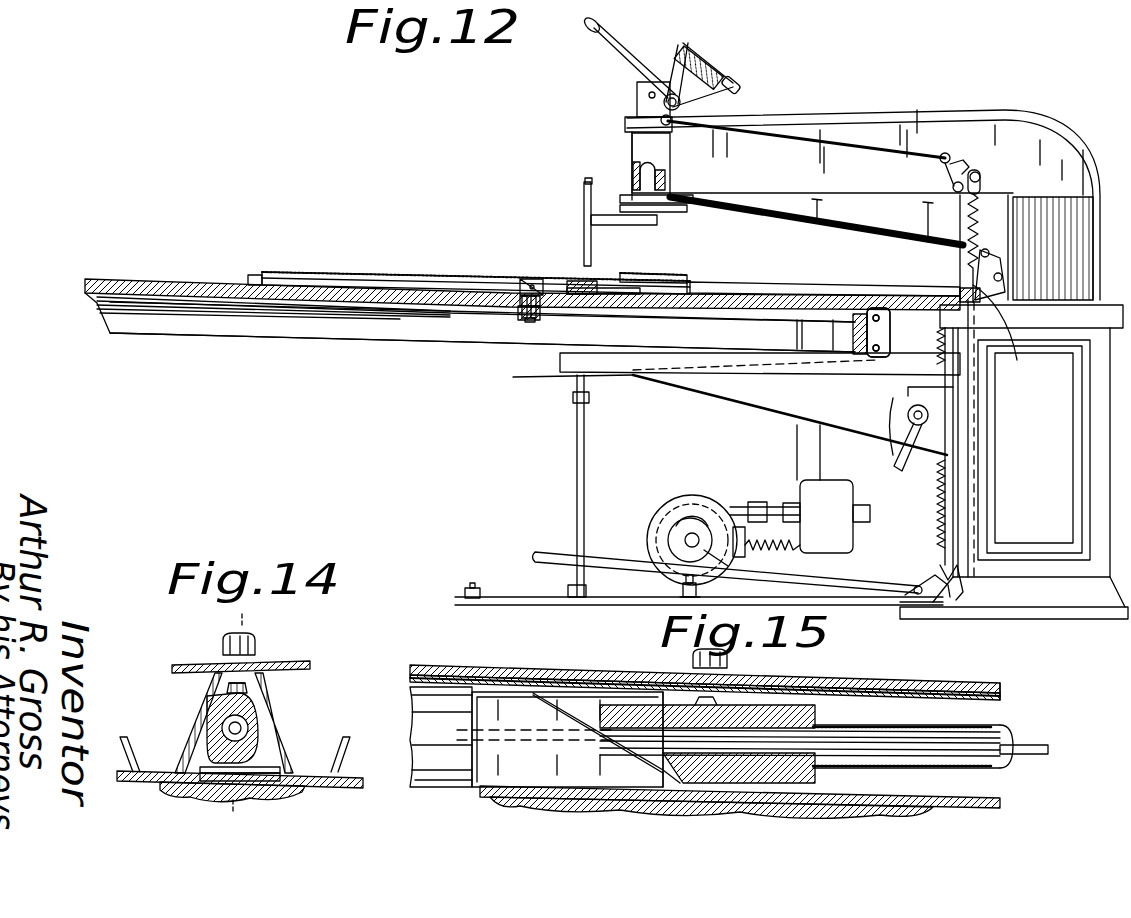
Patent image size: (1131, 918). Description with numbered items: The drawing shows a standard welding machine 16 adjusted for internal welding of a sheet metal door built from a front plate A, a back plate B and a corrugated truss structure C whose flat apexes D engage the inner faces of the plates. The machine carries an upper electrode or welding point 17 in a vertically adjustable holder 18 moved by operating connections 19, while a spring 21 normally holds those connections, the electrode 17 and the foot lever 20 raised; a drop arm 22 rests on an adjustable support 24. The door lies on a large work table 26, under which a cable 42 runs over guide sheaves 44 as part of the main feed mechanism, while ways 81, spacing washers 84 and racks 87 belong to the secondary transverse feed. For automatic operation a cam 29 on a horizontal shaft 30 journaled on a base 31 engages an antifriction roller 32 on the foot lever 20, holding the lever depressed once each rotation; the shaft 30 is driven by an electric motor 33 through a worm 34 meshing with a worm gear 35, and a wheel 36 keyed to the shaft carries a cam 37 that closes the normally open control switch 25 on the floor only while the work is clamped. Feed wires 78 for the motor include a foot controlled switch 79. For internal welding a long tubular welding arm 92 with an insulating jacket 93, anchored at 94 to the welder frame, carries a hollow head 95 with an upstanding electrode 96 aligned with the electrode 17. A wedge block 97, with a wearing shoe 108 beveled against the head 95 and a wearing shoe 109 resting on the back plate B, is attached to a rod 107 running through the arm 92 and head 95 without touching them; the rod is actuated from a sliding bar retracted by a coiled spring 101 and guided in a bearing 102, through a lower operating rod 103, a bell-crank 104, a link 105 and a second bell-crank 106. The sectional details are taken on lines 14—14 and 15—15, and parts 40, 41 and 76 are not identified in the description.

In FIG. 12, the section line 14 is at (593, 238).
In FIG. 14, the section line 15 is at (236, 713).
In FIG. 12, the welding machine 16 is at (1075, 135).
In FIG. 12, the upper electrode 17 is at (583, 240).
In FIG. 14, the upper electrode 17 is at (222, 646).
In FIG. 15, the upper electrode 17 is at (692, 660).
In FIG. 12, the vertically adjustable holder 18 is at (662, 178).
In FIG. 12, the operating connections 19 is at (832, 140).
In FIG. 12, the foot lever 20 is at (938, 580).
In FIG. 12, the spring 21 is at (982, 245).
In FIG. 12, the drop arm 22 is at (735, 380).
In FIG. 12, the adjustable support 24 is at (576, 432).
In FIG. 12, the control switch 25 is at (680, 596).
In FIG. 12, the work table 26 is at (190, 281).
In FIG. 14, the work table 26 is at (300, 800).
In FIG. 15, the work table 26 is at (590, 808).
In FIG. 12, the cam 29 is at (680, 528).
In FIG. 12, the horizontal shaft 30 is at (684, 541).
In FIG. 12, the base 31 is at (729, 588).
In FIG. 12, the antifriction roller 32 is at (704, 552).
In FIG. 12, the electric motor 33 is at (825, 488).
In FIG. 12, the worm 34 is at (708, 512).
In FIG. 12, the worm gear 35 is at (718, 514).
In FIG. 12, the wheel 36 is at (680, 498).
In FIG. 12, the cam 37 is at (702, 503).
In FIG. 12, the guide rail 40 is at (275, 272).
In FIG. 12, the clip 41 is at (250, 275).
In FIG. 12, the cable 42 is at (892, 330).
In FIG. 12, the guide sheaves 44 is at (890, 316).
In FIG. 12, the rod 76 is at (567, 573).
In FIG. 12, the electric feed wires 78 is at (905, 450).
In FIG. 12, the foot controlled switch 79 is at (472, 586).
In FIG. 12, the ways 81 is at (522, 312).
In FIG. 12, the spacing washers 84 is at (527, 326).
In FIG. 12, the racks 87 is at (535, 318).
In FIG. 12, the welding arm 92 is at (740, 288).
In FIG. 15, the welding arm 92 is at (1000, 745).
In FIG. 15, the insulating jacket 93 is at (975, 730).
In FIG. 12, the anchorage 94 is at (955, 292).
In FIG. 12, the hollow head 95 is at (610, 281).
In FIG. 14, the hollow head 95 is at (250, 708).
In FIG. 15, the hollow head 95 is at (822, 718).
In FIG. 12, the welding point 96 is at (575, 281).
In FIG. 14, the welding point 96 is at (250, 688).
In FIG. 15, the welding point 96 is at (730, 698).
In FIG. 12, the wedge block 97 is at (519, 287).
In FIG. 15, the wedge block 97 is at (550, 690).
In FIG. 12, the coiled spring 101 is at (757, 512).
In FIG. 12, the bearing 102 is at (738, 527).
In FIG. 12, the lower operating rod 103 is at (845, 572).
In FIG. 12, the bell-crank 104 is at (955, 603).
In FIG. 12, the link 105 is at (985, 297).
In FIG. 12, the bell-crank 106 is at (1005, 262).
In FIG. 12, the rod 107 is at (548, 312).
In FIG. 14, the rod 107 is at (228, 730).
In FIG. 15, the rod 107 is at (405, 725).
In FIG. 15, the wearing shoe 108 is at (572, 690).
In FIG. 12, the wearing shoe 109 is at (530, 278).
In FIG. 14, the wearing shoe 109 is at (185, 783).
In FIG. 15, the wearing shoe 109 is at (536, 770).
In FIG. 12, the front plate A is at (418, 276).
In FIG. 14, the front plate A is at (306, 662).
In FIG. 15, the front plate A is at (900, 680).
In FIG. 12, the back plate B is at (365, 302).
In FIG. 14, the back plate B is at (362, 778).
In FIG. 15, the back plate B is at (918, 805).
In FIG. 12, the truss structure C is at (485, 302).
In FIG. 14, the truss structure C is at (212, 705).
In FIG. 15, the truss structure C is at (1000, 690).
In FIG. 12, the flat apexes D is at (440, 302).
In FIG. 14, the flat apexes D is at (220, 690).
In FIG. 15, the flat apexes D is at (940, 700).